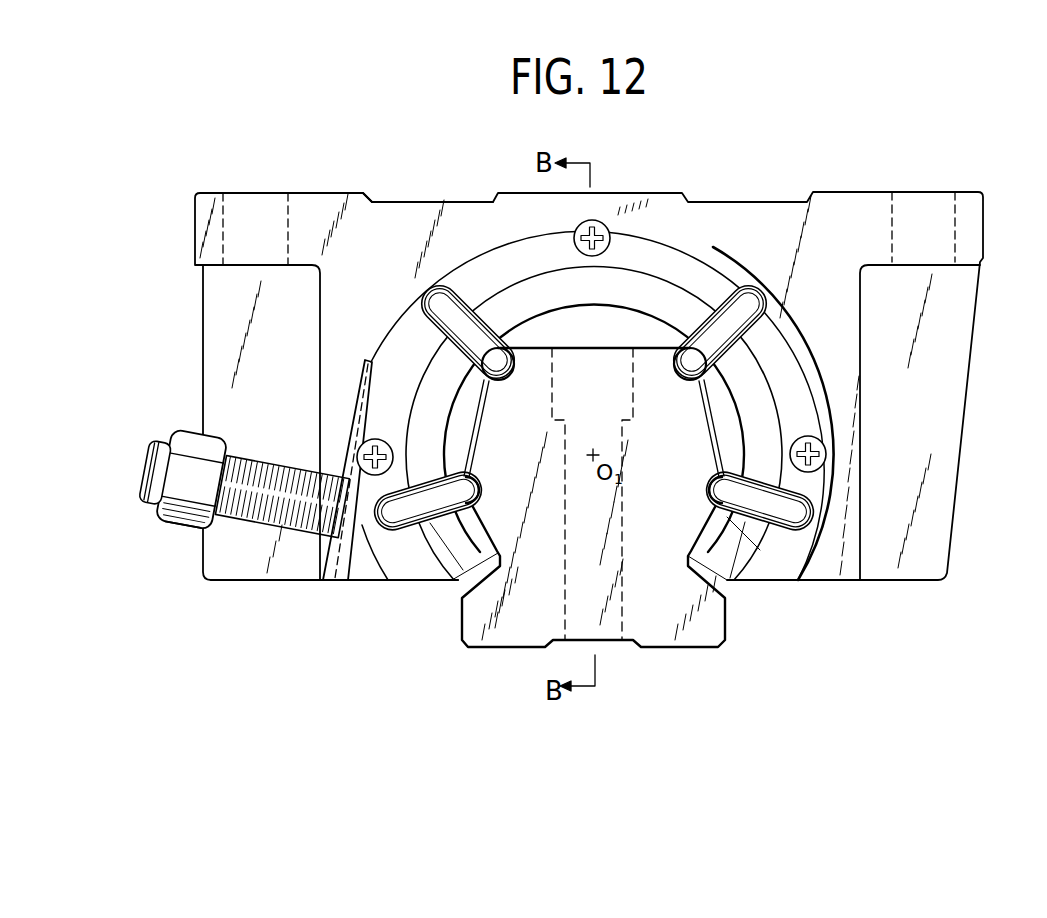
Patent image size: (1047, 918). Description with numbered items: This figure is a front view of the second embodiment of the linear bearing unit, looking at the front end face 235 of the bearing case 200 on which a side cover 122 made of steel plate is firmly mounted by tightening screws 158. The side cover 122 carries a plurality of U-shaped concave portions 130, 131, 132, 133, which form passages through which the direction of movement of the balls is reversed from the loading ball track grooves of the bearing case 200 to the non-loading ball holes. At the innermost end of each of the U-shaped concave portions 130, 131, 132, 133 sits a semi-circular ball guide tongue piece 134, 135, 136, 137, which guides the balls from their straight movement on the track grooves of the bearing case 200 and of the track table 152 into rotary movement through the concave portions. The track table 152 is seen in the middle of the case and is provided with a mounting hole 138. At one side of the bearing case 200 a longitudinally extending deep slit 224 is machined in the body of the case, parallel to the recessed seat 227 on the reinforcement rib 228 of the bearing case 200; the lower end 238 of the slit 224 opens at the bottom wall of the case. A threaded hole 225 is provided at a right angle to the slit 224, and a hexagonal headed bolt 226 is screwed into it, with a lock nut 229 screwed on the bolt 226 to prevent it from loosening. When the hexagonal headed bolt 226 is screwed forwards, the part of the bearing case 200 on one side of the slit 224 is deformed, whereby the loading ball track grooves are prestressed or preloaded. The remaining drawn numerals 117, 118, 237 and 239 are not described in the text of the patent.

The mounting bolt hole 117 is at (227, 232).
The mounting bolt hole 118 is at (893, 212).
The side cover 122 is at (640, 238).
The U-shaped concave portion 130 is at (462, 302).
The U-shaped concave portion 131 is at (750, 334).
The U-shaped concave portion 132 is at (400, 527).
The U-shaped concave portion 133 is at (767, 531).
The semi-circular ball guide tongue piece 134 is at (510, 381).
The semi-circular ball guide tongue piece 135 is at (684, 383).
The semi-circular ball guide tongue piece 136 is at (472, 488).
The semi-circular ball guide tongue piece 137 is at (705, 488).
The mounting hole 138 is at (566, 628).
The track table 152 is at (657, 630).
The tightening screw 158 is at (579, 226).
The bearing case 200 is at (849, 190).
The deep slit 224 is at (338, 581).
The threaded hole 225 is at (220, 512).
The hexagonal headed bolt 226 is at (172, 442).
The recessed seat 227 is at (205, 530).
The reinforcement rib 228 is at (218, 332).
The lock nut 229 is at (163, 512).
The front end face 235 is at (410, 215).
The wedge gib 237 is at (365, 358).
The lower end of slit 238 is at (326, 583).
The block bottom 239 is at (258, 583).